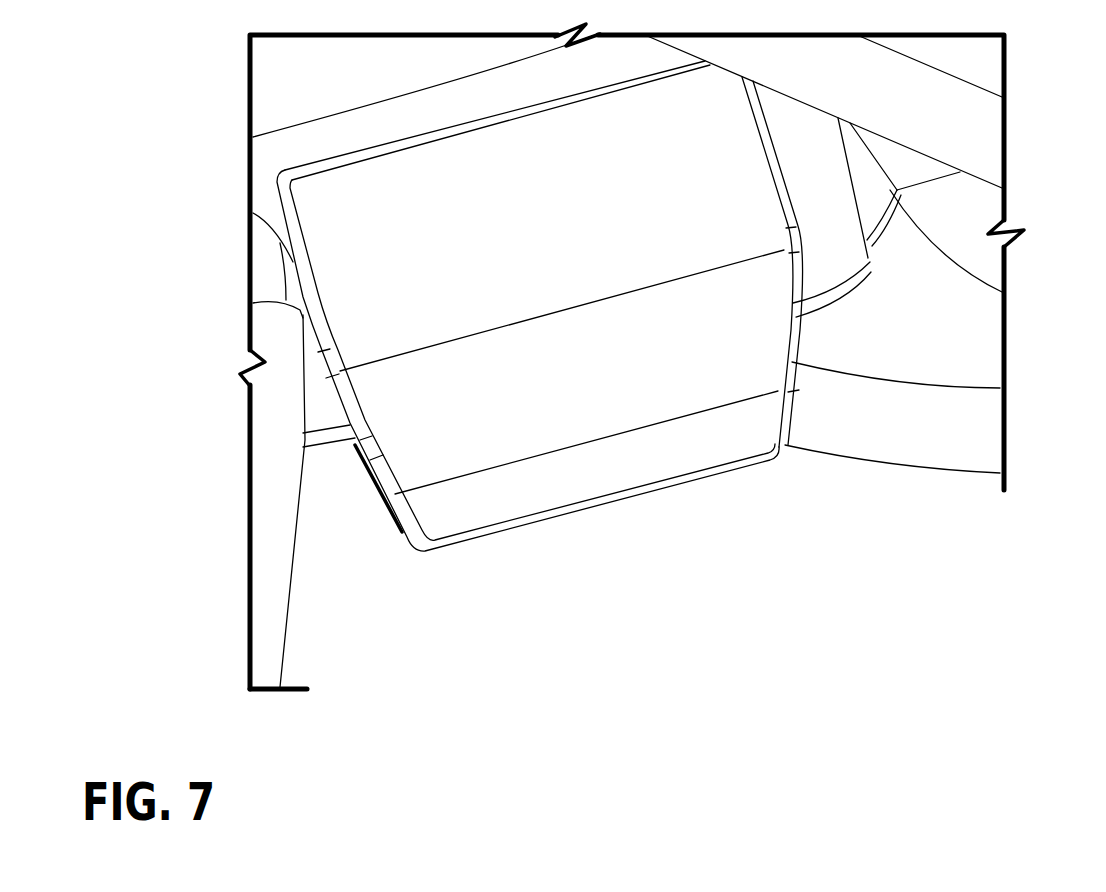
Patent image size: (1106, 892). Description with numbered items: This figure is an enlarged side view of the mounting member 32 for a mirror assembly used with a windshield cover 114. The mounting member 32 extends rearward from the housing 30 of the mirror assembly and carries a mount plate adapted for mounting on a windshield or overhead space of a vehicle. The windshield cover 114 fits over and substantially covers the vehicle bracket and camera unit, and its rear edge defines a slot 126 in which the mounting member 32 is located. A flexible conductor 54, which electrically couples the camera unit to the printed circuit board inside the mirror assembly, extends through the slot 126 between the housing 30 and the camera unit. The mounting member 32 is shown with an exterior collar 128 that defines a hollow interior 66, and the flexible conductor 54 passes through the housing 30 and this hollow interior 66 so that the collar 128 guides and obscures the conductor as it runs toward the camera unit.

The windshield cover 114 is at (283, 80).
The housing 30 is at (270, 518).
The mounting member 32 is at (890, 187).
The flexible conductor 54 is at (883, 433).
The hollow interior 66 is at (377, 483).
The slot 126 is at (975, 182).
The exterior collar 128 is at (582, 508).